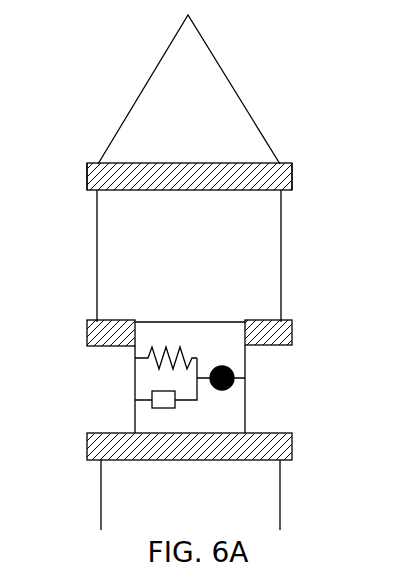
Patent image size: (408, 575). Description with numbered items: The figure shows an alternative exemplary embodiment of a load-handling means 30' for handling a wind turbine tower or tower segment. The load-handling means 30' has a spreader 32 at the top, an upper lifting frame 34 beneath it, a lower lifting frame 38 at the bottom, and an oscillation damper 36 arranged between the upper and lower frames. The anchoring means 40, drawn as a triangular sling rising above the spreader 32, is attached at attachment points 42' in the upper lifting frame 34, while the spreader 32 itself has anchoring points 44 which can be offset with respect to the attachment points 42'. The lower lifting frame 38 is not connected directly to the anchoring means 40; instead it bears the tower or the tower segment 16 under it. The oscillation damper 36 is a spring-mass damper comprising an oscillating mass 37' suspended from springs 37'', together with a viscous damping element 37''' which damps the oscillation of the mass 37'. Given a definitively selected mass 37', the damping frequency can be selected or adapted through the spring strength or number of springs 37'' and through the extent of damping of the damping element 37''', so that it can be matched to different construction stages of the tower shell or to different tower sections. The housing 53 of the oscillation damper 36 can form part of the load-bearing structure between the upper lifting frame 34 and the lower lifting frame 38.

The anchoring means 40 is at (217, 58).
The spreader 32 is at (237, 163).
The anchoring points 44 is at (90, 158).
The load-handling means 30' is at (238, 311).
The attachment points 42' is at (92, 362).
The upper lifting frame 34 is at (262, 320).
The housing 53 is at (246, 400).
The oscillating mass 37' is at (131, 283).
The springs 37'' is at (110, 312).
The viscous damping element 37''' is at (120, 426).
The oscillation damper 36 is at (236, 380).
The lower lifting frame 38 is at (292, 445).
The tower segment 16 is at (260, 499).